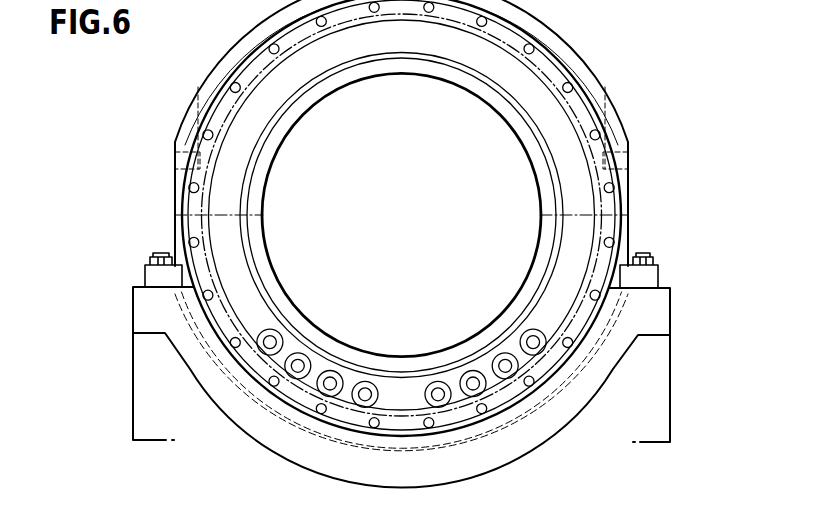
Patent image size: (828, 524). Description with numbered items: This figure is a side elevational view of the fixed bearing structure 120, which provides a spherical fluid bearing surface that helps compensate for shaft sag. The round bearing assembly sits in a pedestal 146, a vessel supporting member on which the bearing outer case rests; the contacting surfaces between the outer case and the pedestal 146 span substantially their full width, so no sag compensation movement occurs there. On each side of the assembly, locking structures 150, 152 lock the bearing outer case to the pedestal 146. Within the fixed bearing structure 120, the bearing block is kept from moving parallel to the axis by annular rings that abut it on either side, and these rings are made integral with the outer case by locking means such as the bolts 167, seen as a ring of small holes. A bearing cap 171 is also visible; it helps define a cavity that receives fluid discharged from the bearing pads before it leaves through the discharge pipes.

The fixed bearing structure 120 is at (630, 38).
The pedestal 146 is at (148, 367).
The locking structure 150 is at (139, 246).
The locking structure 152 is at (667, 247).
The bolt 167 is at (271, 388).
The bearing cap 171 is at (258, 316).